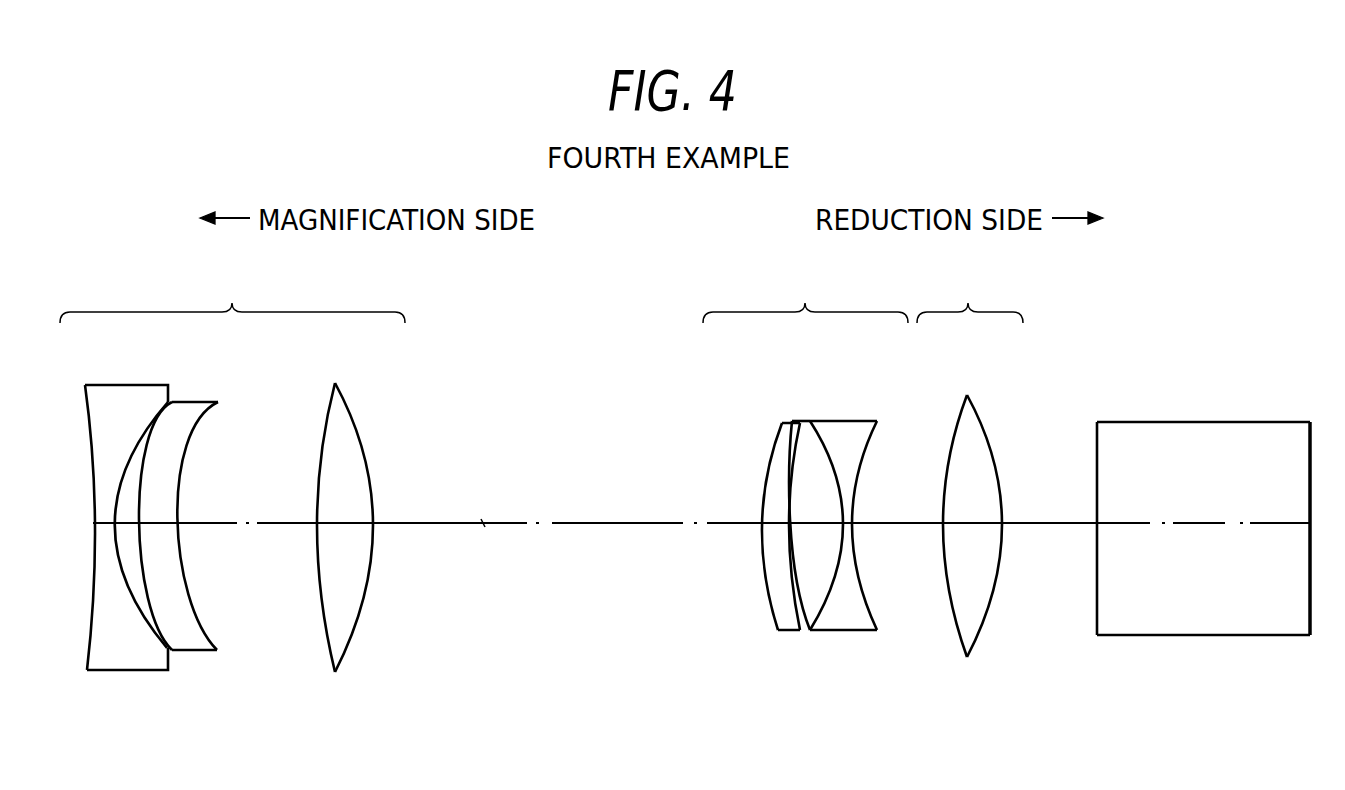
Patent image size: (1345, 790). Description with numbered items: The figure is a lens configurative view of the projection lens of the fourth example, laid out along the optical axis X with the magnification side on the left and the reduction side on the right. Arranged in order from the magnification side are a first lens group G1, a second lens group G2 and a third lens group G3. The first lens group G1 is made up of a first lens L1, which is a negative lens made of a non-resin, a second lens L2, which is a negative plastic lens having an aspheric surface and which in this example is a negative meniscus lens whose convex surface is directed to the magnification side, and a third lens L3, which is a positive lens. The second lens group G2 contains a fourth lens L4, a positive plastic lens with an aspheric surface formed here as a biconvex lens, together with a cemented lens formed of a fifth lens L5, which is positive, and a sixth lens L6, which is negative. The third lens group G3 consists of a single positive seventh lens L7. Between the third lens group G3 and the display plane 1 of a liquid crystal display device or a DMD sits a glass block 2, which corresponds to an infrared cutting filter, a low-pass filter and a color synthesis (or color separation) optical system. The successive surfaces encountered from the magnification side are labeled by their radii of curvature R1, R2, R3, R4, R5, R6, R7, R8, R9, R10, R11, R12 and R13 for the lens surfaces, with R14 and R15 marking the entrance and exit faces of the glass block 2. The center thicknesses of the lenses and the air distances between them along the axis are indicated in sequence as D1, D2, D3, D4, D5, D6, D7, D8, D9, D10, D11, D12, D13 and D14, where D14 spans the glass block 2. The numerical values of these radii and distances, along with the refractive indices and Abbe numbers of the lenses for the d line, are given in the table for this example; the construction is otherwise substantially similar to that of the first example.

The first lens group G1 is at (224, 507).
The second lens group G2 is at (818, 497).
The third lens group G3 is at (994, 500).
The first lens L1 is at (120, 670).
The second lens L2 is at (194, 650).
The third lens L3 is at (335, 672).
The fourth lens L4 is at (778, 630).
The fifth lens L5 is at (813, 617).
The sixth lens L6 is at (854, 617).
The seventh lens L7 is at (967, 657).
The radius of curvature of lens surface R1 is at (93, 510).
The radius of curvature of lens surface R2 is at (128, 482).
The radius of curvature of lens surface R3 is at (173, 650).
The radius of curvature of lens surface R4 is at (195, 507).
The radius of curvature of lens surface R5 is at (315, 497).
The radius of curvature of lens surface R6 is at (372, 468).
The radius of curvature of lens surface R7 is at (762, 520).
The radius of curvature of lens surface R8 is at (797, 468).
The radius of curvature of lens surface R9 is at (792, 420).
The radius of curvature of lens surface R10 is at (836, 458).
The radius of curvature of lens surface R11 is at (857, 508).
The radius of curvature of lens surface R12 is at (945, 455).
The radius of curvature of lens surface R13 is at (1003, 498).
The radius of curvature of lens surface R14 is at (1097, 442).
The radius of curvature of lens surface R15 is at (1312, 452).
The center thickness / air distance D1 is at (112, 528).
The center thickness / air distance D2 is at (130, 530).
The center thickness / air distance D3 is at (165, 540).
The center thickness / air distance D4 is at (247, 544).
The center thickness / air distance D5 is at (345, 544).
The center thickness / air distance D6 is at (568, 542).
The center thickness / air distance D7 is at (775, 530).
The center thickness / air distance D8 is at (790, 530).
The center thickness / air distance D9 is at (816, 543).
The center thickness / air distance D10 is at (850, 530).
The center thickness / air distance D11 is at (897, 543).
The center thickness / air distance D12 is at (972, 544).
The center thickness / air distance D13 is at (1049, 544).
The center thickness / air distance D14 is at (1203, 543).
The optical axis X is at (483, 523).
The display plane 1 is at (1313, 603).
The glass block 2 is at (1202, 627).